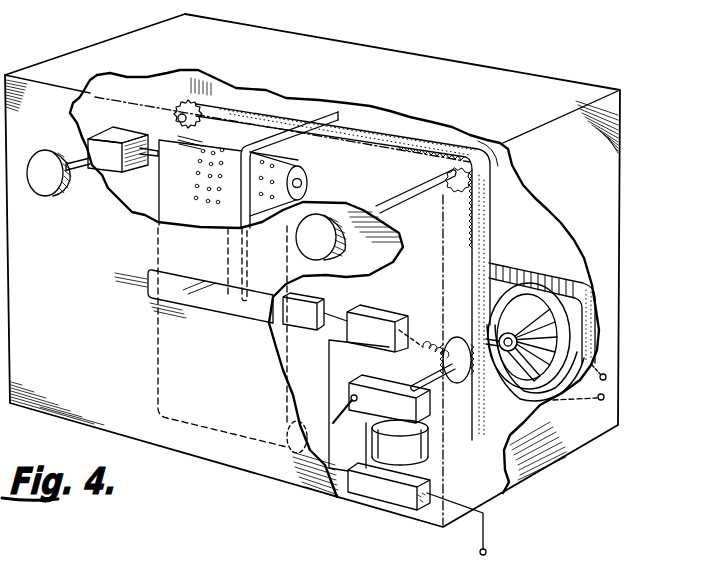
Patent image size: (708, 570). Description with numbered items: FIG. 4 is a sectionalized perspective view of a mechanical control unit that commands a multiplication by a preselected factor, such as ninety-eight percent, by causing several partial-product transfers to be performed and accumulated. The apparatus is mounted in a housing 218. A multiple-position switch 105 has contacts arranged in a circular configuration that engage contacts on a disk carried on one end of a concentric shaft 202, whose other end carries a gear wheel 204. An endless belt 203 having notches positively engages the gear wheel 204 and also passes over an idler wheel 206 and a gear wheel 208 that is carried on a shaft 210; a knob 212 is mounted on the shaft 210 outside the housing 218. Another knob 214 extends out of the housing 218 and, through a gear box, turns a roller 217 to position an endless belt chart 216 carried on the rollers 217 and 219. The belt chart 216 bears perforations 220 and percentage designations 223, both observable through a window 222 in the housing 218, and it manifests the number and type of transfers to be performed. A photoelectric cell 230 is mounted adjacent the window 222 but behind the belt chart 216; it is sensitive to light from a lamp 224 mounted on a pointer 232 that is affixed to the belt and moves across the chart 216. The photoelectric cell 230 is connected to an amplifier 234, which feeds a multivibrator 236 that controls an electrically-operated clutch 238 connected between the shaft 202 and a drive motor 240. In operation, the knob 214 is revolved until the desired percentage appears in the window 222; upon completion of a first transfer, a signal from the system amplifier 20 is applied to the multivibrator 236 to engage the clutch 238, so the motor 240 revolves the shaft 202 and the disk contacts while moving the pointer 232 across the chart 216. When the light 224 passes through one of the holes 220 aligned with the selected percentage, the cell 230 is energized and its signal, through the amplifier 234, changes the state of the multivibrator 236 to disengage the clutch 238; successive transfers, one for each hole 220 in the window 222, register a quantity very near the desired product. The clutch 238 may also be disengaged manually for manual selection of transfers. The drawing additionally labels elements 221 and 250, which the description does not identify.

The idler wheel 206 is at (174, 100).
The casing wall 221 is at (72, 103).
The perforations 220 is at (222, 140).
The pointer 232 is at (305, 122).
The endless belt 203 is at (394, 136).
The gear wheel 208 is at (497, 160).
The roller 217 is at (301, 174).
The shaft 210 is at (405, 196).
The knob 212 is at (343, 237).
The knob 214 is at (55, 192).
The percentage designations 223 is at (157, 177).
The endless belt chart 216 is at (157, 207).
The window 222 is at (167, 298).
The lamp 224 is at (228, 300).
The roller 219 is at (280, 450).
The photoelectric cell 230 is at (337, 293).
The amplifier 234 is at (418, 297).
The gear wheel 204 is at (442, 353).
The rack 250 is at (542, 275).
The multiple-position switch 105 is at (528, 342).
The housing 218 is at (608, 376).
The concentric shaft 202 is at (490, 387).
The electrically-operated clutch 238 is at (390, 385).
The drive motor 240 is at (418, 443).
The multivibrator circuit 236 is at (395, 498).
The amplifier 20 is at (465, 531).